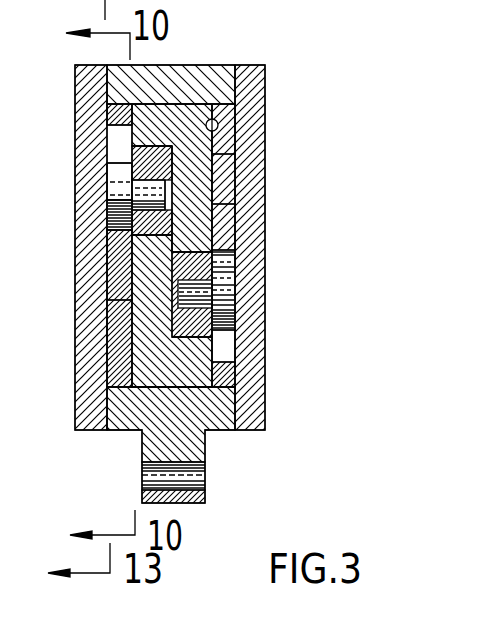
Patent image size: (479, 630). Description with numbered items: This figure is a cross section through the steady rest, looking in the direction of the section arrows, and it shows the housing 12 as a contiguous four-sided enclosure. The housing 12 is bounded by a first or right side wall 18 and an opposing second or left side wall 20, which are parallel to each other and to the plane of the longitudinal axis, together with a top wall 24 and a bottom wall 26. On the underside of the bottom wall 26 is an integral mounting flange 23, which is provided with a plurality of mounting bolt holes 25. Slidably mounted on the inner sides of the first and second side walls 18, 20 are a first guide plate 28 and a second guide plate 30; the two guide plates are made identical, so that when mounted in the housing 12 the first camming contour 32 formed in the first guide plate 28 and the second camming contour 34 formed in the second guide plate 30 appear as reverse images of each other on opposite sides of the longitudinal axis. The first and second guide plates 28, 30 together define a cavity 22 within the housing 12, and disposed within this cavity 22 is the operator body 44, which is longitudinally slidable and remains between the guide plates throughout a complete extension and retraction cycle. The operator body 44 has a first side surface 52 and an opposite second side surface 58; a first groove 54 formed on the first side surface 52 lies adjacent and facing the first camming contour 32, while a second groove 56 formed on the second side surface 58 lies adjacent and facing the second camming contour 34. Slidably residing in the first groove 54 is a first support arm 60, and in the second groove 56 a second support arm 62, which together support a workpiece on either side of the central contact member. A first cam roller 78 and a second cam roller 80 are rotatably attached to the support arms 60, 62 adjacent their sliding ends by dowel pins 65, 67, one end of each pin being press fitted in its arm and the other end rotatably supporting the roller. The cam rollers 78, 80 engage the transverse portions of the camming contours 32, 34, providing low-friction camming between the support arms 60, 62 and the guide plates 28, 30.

The housing 12 is at (265, 55).
The first side wall 18 is at (248, 195).
The second side wall 20 is at (93, 267).
The cavity 22 is at (212, 115).
The mounting flange 23 is at (160, 440).
The top wall 24 is at (160, 68).
The mounting bolt holes 25 is at (143, 482).
The bottom wall 26 is at (217, 415).
The first guide plate 28 is at (235, 159).
The second guide plate 30 is at (117, 250).
The first camming contour 32 is at (246, 355).
The second camming contour 34 is at (100, 137).
The operator body 44 is at (153, 360).
The first side surface 52 is at (217, 222).
The first groove 54 is at (193, 337).
The second groove 56 is at (135, 163).
The second side surface 58 is at (130, 302).
The first support arm 60 is at (192, 265).
The second support arm 62 is at (120, 228).
The dowel pin 65 is at (203, 285).
The dowel pin 67 is at (143, 188).
The first cam roller 78 is at (212, 308).
The second cam roller 80 is at (118, 172).